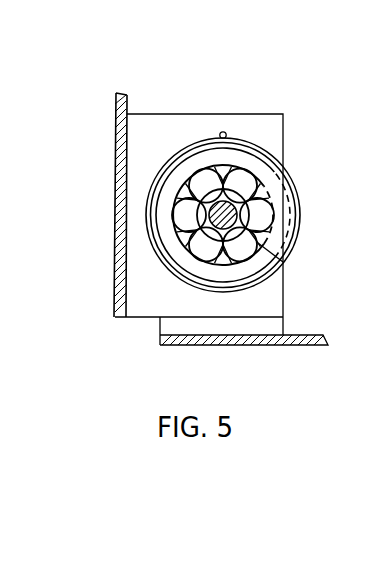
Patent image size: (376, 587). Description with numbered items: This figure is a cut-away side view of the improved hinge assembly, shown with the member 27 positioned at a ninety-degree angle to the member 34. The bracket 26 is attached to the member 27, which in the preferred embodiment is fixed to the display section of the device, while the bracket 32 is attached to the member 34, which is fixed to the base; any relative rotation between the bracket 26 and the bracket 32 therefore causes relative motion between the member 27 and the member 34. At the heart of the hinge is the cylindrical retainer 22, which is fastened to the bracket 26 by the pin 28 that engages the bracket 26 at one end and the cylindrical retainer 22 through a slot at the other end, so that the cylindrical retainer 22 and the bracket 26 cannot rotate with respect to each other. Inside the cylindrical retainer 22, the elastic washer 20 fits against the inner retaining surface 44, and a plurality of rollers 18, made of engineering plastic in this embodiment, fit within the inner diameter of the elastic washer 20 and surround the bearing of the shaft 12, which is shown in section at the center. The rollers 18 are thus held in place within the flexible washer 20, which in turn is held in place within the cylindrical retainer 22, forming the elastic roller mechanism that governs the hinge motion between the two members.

The shaft 12 is at (241, 203).
The rollers 18 is at (270, 205).
The elastic washer 20 is at (206, 158).
The cylindrical retainer 22 is at (290, 182).
The bracket 26 is at (153, 113).
The member 27 is at (117, 92).
The pin 28 is at (225, 133).
The bracket 32 is at (283, 332).
The member 34 is at (323, 335).
The inner retaining surface 44 is at (178, 160).